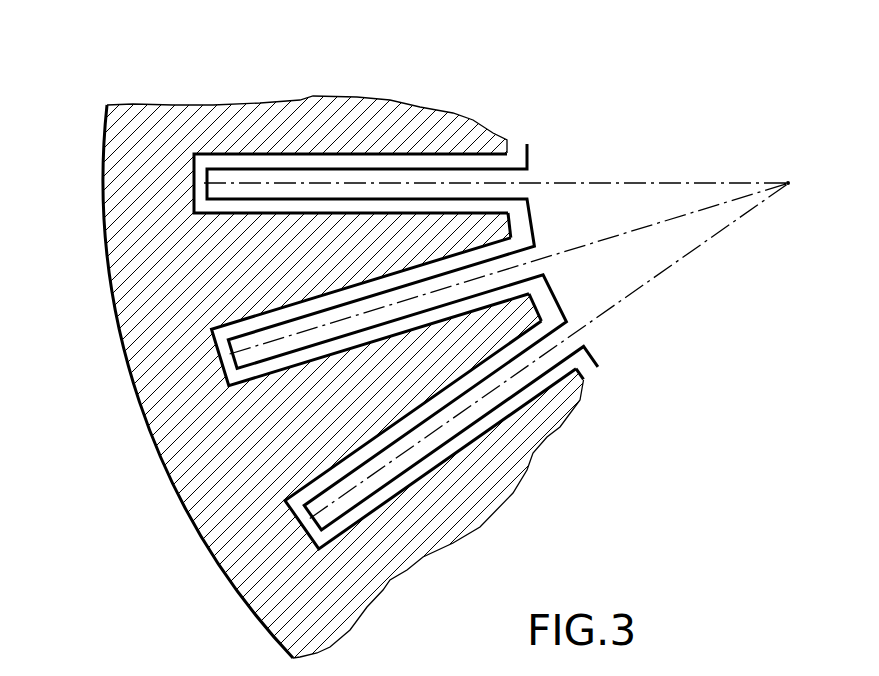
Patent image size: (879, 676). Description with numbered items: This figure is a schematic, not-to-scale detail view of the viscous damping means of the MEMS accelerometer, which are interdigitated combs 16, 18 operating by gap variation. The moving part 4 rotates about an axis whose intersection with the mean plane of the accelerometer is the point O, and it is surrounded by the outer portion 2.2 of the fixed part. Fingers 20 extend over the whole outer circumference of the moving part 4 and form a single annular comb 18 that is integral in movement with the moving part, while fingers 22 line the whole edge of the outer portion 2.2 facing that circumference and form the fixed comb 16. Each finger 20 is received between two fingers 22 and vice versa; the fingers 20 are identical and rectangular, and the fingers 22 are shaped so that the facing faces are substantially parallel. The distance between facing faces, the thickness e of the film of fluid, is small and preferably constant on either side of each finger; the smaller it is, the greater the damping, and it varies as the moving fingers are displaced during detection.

The outer portion of the fixed part 2.2 is at (118, 224).
The moving part 4 is at (563, 136).
The comb fixed to the outer portion 16 is at (487, 232).
The comb integral with the moving part 18 is at (528, 287).
The fingers of the moving part 20 is at (263, 177).
The fingers of the outer portion 22 is at (385, 237).
The thickness of the film of fluid e is at (273, 341).
The intersection point of the axis of rotation with the plane O is at (511, 344).